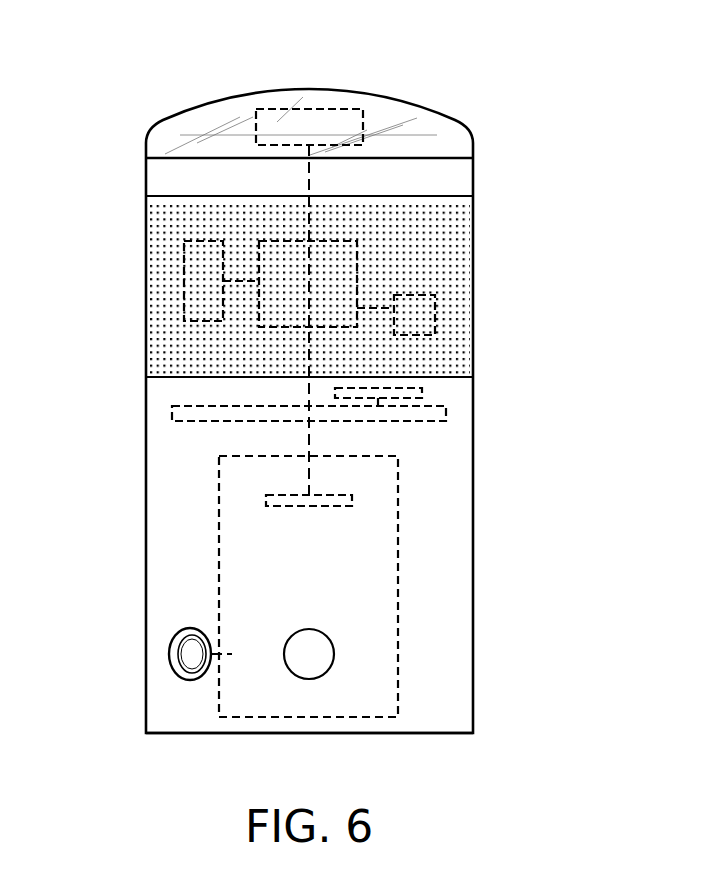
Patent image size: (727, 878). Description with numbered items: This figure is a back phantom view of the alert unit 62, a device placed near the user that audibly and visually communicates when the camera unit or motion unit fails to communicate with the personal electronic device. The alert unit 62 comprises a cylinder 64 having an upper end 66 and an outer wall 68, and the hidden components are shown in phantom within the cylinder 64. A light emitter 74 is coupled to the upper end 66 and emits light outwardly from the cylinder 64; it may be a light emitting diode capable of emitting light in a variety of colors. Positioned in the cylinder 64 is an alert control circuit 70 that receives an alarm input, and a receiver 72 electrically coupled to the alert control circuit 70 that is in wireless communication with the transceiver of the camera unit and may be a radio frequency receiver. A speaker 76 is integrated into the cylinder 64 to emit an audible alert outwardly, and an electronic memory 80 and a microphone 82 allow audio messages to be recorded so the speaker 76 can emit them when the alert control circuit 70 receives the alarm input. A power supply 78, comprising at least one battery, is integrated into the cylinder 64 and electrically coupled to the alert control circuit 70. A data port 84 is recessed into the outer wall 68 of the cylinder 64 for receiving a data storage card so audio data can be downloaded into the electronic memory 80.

The alert unit 62 is at (537, 135).
The cylinder 64 is at (473, 530).
The upper end 66 is at (417, 148).
The outer wall 68 is at (430, 733).
The alert control circuit 70 is at (172, 412).
The receiver 72 is at (422, 392).
The light emitter 74 is at (278, 120).
The speaker 76 is at (358, 262).
The power supply 78 is at (384, 588).
The electronic memory 80 is at (184, 262).
The microphone 82 is at (435, 312).
The data port 84 is at (267, 500).